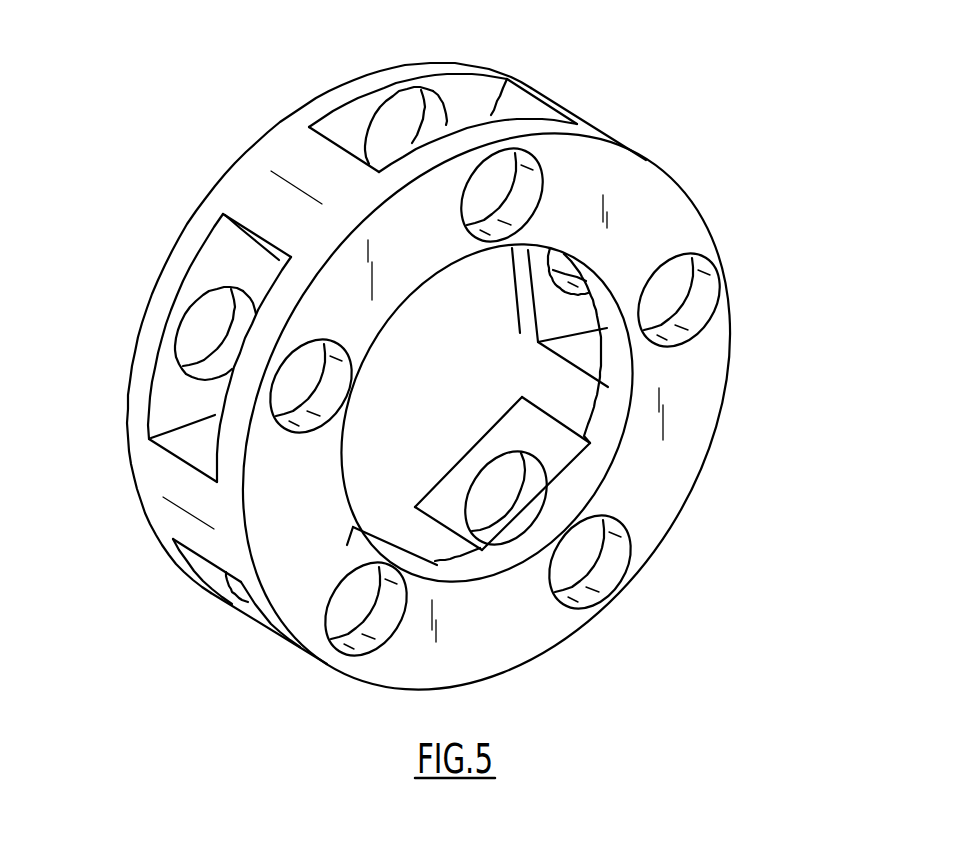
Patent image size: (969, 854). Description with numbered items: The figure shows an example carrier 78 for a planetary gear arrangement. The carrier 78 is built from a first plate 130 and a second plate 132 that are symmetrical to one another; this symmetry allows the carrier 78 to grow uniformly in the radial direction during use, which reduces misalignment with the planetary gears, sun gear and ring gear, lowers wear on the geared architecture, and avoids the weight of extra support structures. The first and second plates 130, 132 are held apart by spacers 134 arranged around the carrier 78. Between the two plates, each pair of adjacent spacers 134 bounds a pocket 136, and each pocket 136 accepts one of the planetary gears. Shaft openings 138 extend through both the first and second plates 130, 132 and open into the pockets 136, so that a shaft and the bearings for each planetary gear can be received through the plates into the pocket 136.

The carrier 78 is at (745, 108).
The first plate 130 is at (140, 376).
The second plate 132 is at (683, 493).
The spacers 134 is at (285, 178).
The pockets 136 is at (480, 107).
The shaft openings 138 is at (407, 127).